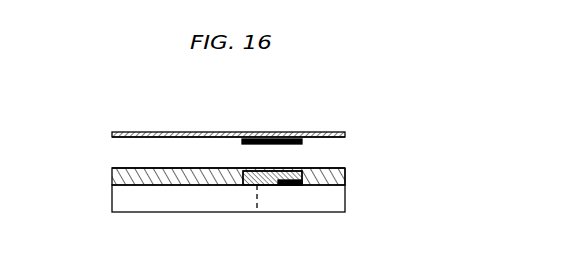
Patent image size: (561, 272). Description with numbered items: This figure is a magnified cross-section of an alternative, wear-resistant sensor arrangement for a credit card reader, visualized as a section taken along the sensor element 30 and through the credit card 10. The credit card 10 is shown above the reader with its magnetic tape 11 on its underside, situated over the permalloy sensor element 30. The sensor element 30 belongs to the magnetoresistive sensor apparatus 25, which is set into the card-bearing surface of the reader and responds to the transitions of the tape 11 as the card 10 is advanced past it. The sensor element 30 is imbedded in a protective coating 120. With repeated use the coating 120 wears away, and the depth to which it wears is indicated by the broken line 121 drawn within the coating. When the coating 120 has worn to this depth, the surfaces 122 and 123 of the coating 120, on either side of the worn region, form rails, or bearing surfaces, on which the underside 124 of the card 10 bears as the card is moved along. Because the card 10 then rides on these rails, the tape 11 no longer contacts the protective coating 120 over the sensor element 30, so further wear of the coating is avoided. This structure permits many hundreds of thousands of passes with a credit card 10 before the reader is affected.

The credit card 10 is at (193, 132).
The tape 11 is at (273, 139).
The underside of card 124 is at (118, 143).
The surface of coating 123 is at (112, 169).
The protective coating 120 is at (112, 174).
The surface of coating 122 is at (336, 169).
The sensor element 30 is at (289, 186).
The magnetoresistive sensor apparatus 25 is at (163, 200).
The broken line 121 is at (257, 212).